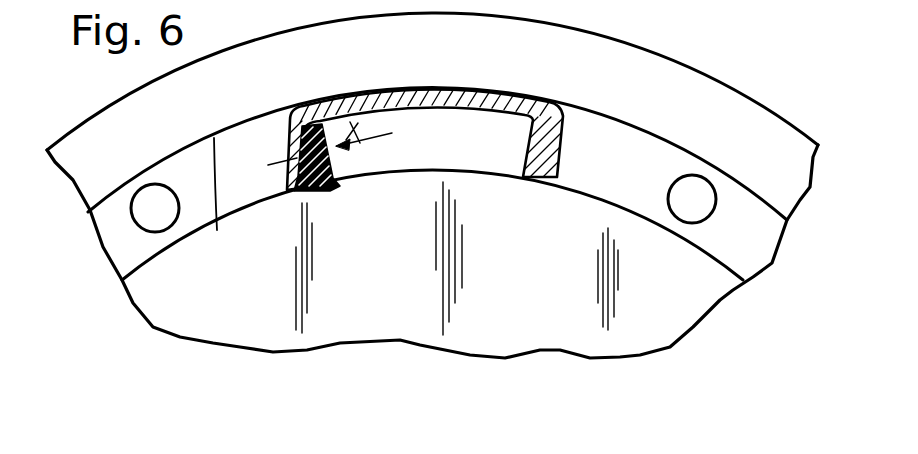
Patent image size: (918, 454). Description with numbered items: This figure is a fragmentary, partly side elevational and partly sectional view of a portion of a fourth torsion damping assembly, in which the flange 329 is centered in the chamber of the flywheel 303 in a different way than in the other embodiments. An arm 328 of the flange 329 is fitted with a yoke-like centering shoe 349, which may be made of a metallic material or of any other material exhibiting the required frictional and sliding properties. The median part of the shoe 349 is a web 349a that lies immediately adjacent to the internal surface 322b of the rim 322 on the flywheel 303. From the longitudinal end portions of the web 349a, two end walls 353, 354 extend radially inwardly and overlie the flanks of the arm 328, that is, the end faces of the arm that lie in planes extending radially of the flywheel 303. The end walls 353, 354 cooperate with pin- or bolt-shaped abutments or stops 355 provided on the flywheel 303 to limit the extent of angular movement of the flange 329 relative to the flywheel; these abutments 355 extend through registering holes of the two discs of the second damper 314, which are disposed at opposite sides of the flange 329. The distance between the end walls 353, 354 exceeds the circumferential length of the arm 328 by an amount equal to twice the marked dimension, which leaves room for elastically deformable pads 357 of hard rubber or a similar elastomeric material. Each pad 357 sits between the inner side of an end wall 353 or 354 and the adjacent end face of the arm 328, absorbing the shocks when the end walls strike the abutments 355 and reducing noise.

The flywheel 303 is at (698, 105).
The rim 322 is at (627, 63).
The internal surface 322b is at (220, 206).
The second damper 314 is at (773, 277).
The arm 328 is at (423, 133).
The flange 329 is at (660, 327).
The centering shoe 349 is at (449, 143).
The web 349a is at (425, 140).
The end wall 353 is at (295, 188).
The end wall 354 is at (553, 183).
The abutment 355 is at (705, 212).
The pad 357 is at (335, 180).